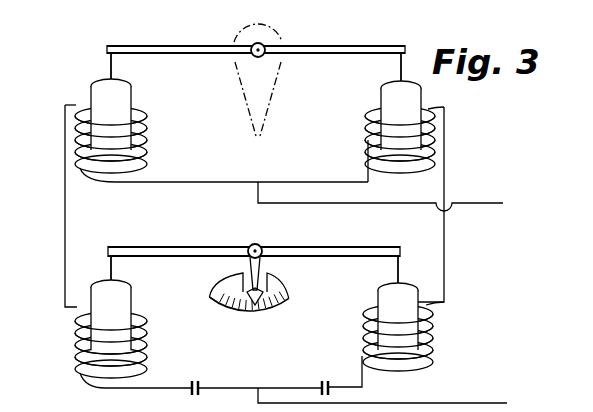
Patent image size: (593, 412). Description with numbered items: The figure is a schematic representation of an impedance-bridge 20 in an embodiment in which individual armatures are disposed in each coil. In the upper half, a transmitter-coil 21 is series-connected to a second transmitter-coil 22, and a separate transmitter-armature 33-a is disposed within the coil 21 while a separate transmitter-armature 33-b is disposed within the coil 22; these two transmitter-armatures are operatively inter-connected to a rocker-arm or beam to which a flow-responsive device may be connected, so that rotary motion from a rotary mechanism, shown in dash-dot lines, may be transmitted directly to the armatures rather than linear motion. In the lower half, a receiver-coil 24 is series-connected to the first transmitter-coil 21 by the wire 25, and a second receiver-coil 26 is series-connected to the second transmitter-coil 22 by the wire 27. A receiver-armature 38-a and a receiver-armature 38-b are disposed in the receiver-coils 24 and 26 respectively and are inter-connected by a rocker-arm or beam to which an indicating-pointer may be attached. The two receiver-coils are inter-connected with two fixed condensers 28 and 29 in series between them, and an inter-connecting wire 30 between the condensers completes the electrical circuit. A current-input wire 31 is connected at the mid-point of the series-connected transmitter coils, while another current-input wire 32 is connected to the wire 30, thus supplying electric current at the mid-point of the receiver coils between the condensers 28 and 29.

The impedance-bridge 20 is at (310, 168).
The transmitter-coil 21 is at (145, 136).
The second transmitter-coil 22 is at (367, 148).
The receiver-coil 24 is at (144, 346).
The wire 25 is at (66, 221).
The second receiver-coil 26 is at (360, 346).
The wire 27 is at (445, 186).
The fixed condenser 28 is at (213, 377).
The fixed condenser 29 is at (332, 383).
The inter-connecting wire 30 is at (252, 388).
The current-input wire 31 is at (482, 206).
The current-input wire 32 is at (463, 403).
The transmitter-armature 33-a is at (98, 89).
The transmitter-armature 33-b is at (386, 96).
The receiver-armature 38-a is at (124, 305).
The receiver-armature 38-b is at (375, 290).